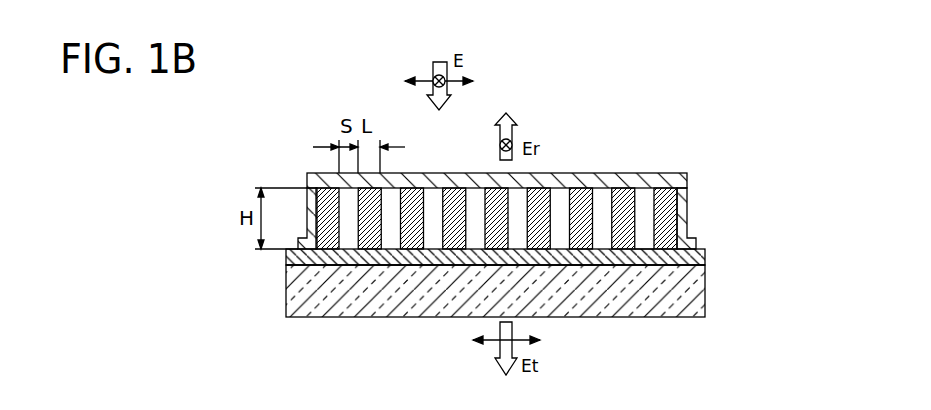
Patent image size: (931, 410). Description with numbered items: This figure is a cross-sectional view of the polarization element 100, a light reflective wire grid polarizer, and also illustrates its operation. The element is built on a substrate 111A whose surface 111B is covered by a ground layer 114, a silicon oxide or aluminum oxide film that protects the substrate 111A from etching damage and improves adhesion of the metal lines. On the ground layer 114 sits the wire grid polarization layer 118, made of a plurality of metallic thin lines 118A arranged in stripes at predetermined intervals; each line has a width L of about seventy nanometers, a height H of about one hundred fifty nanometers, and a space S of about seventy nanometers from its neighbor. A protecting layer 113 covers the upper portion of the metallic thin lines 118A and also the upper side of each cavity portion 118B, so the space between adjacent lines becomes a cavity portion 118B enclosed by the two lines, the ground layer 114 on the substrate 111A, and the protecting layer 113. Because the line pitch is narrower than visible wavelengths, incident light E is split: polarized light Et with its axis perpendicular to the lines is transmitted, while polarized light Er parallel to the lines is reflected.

The polarization element 100 is at (558, 120).
The substrate 111A is at (705, 300).
The surface of the substrate 111B is at (612, 266).
The protecting layer 113 is at (447, 172).
The ground layer 114 is at (705, 257).
The wire grid polarization layer 118 is at (712, 185).
The metallic thin line 118A is at (620, 192).
The cavity portion 118B is at (642, 203).